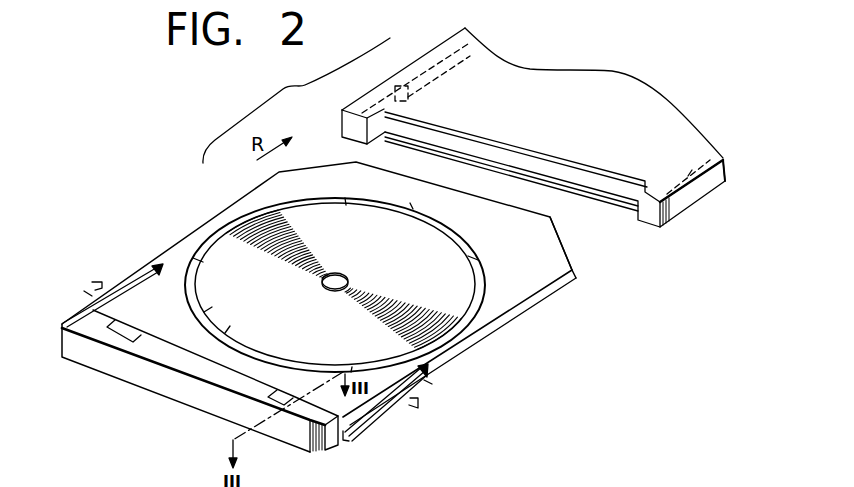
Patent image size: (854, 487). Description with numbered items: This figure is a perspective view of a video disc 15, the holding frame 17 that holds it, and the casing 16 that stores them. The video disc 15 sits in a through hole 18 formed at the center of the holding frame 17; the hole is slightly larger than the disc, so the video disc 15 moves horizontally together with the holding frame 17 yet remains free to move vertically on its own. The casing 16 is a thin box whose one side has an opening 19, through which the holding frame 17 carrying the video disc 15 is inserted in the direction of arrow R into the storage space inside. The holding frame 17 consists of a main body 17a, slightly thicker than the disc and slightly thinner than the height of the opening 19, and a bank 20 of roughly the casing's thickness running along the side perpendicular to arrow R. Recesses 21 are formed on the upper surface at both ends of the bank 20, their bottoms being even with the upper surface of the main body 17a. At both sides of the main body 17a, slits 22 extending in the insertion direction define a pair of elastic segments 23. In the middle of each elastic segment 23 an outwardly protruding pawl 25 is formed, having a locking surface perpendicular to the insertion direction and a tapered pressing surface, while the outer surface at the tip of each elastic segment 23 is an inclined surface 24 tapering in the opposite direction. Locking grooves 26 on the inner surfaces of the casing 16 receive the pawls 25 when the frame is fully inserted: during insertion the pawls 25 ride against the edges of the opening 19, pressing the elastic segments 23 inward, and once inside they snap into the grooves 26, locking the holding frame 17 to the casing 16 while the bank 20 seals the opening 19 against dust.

The video disc 15 is at (346, 277).
The casing 16 is at (464, 124).
The holding frame 17 is at (500, 334).
The main body 17a is at (550, 278).
The through hole 18 is at (470, 251).
The opening 19 is at (480, 147).
The bank 20 is at (200, 388).
The recesses 21 is at (113, 348).
The slits 22 is at (257, 347).
The elastic segments 23 is at (92, 296).
The inclined surface 24 is at (66, 320).
The pawl 25 is at (98, 284).
The locking grooves 26 is at (400, 92).